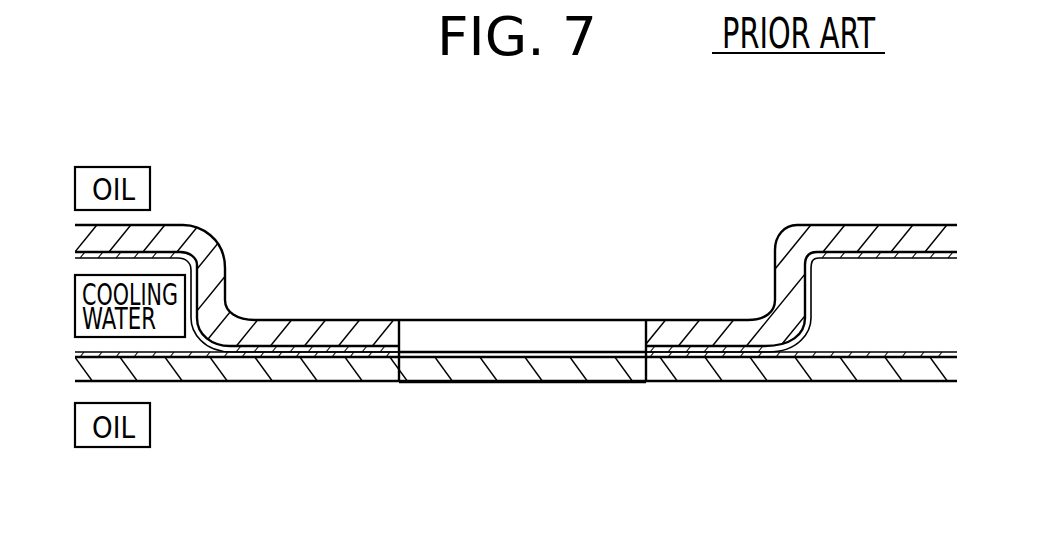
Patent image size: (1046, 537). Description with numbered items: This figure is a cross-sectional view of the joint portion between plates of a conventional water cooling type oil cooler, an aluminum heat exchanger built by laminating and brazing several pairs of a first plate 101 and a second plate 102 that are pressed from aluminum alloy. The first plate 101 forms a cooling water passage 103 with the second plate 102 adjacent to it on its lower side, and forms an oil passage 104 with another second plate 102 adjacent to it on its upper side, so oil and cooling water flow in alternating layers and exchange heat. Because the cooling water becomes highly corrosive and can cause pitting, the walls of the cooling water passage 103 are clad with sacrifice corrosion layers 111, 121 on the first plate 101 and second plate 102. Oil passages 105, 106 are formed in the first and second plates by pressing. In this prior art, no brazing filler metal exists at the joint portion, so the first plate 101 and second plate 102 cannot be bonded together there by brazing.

The first plate 101 is at (903, 230).
The second plate 102 is at (915, 368).
The cooling water passage 103 is at (875, 323).
The oil passage 104 is at (873, 202).
The oil passage 105 is at (470, 342).
The oil passage 106 is at (560, 367).
The sacrifice corrosion layer 111 is at (860, 257).
The sacrifice corrosion layer 121 is at (877, 350).